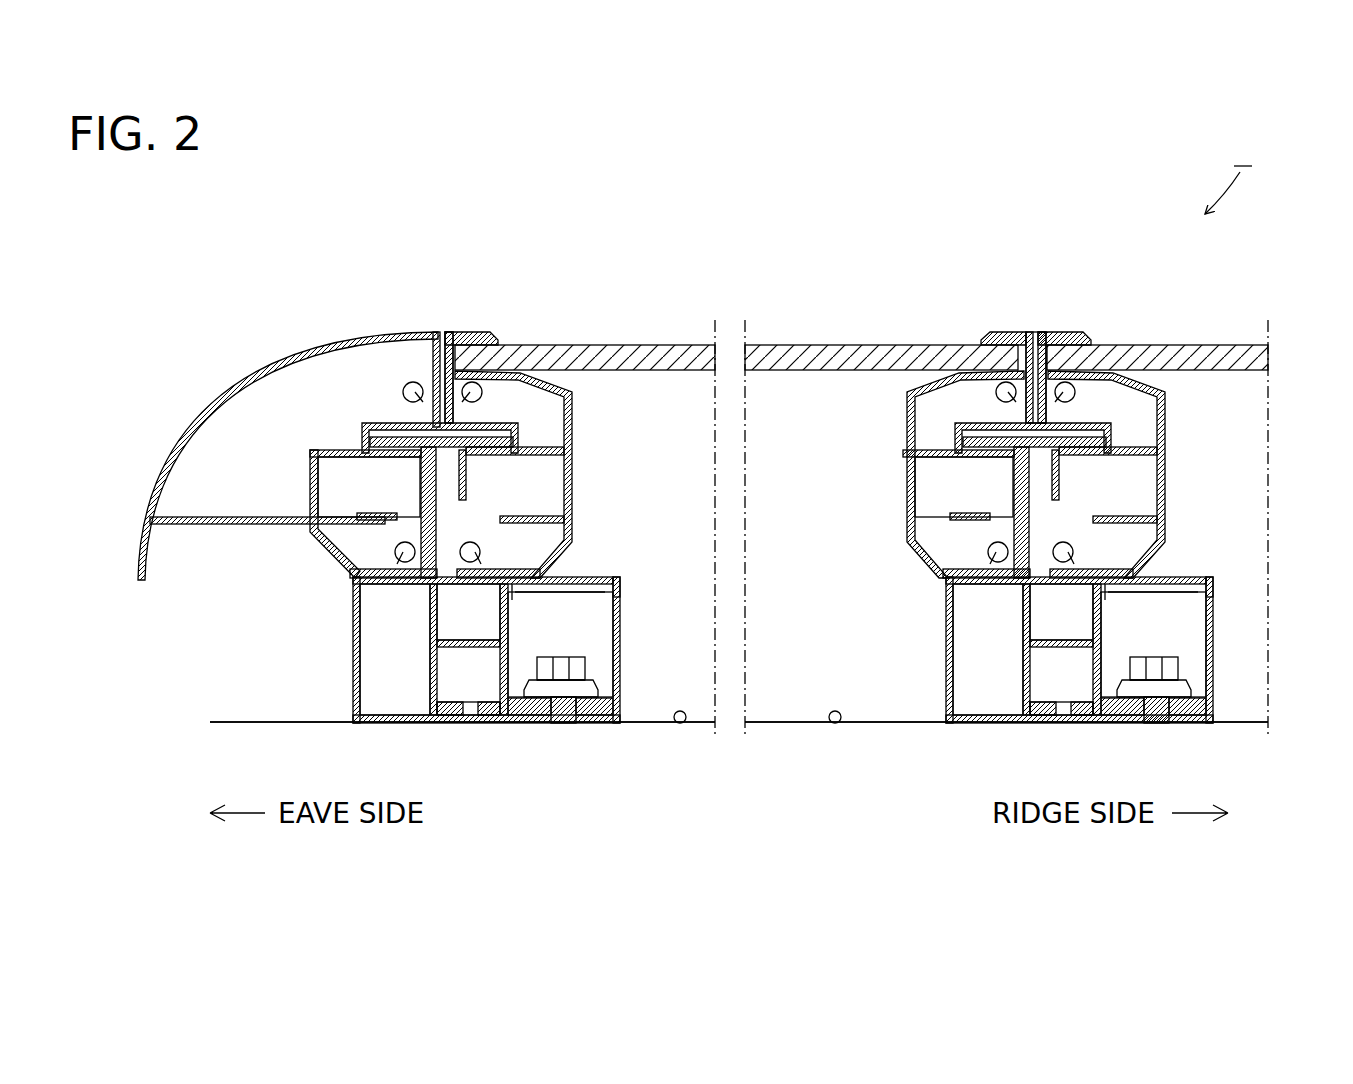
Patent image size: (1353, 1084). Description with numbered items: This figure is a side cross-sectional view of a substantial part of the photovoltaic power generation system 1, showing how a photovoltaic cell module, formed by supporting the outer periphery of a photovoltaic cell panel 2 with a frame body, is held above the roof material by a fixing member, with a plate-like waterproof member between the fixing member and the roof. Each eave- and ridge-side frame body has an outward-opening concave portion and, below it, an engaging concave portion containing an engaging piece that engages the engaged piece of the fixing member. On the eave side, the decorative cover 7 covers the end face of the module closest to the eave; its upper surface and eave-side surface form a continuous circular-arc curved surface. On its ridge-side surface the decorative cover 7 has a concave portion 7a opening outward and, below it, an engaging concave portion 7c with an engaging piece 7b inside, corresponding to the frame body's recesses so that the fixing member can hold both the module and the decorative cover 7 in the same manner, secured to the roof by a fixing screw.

The photovoltaic power generation system 1 is at (1228, 177).
The photovoltaic cell panel 2 is at (785, 350).
The decorative cover 7 is at (289, 440).
The concave portion 7a is at (383, 428).
The engaging piece 7b is at (355, 540).
The engaging concave portion 7c is at (318, 478).